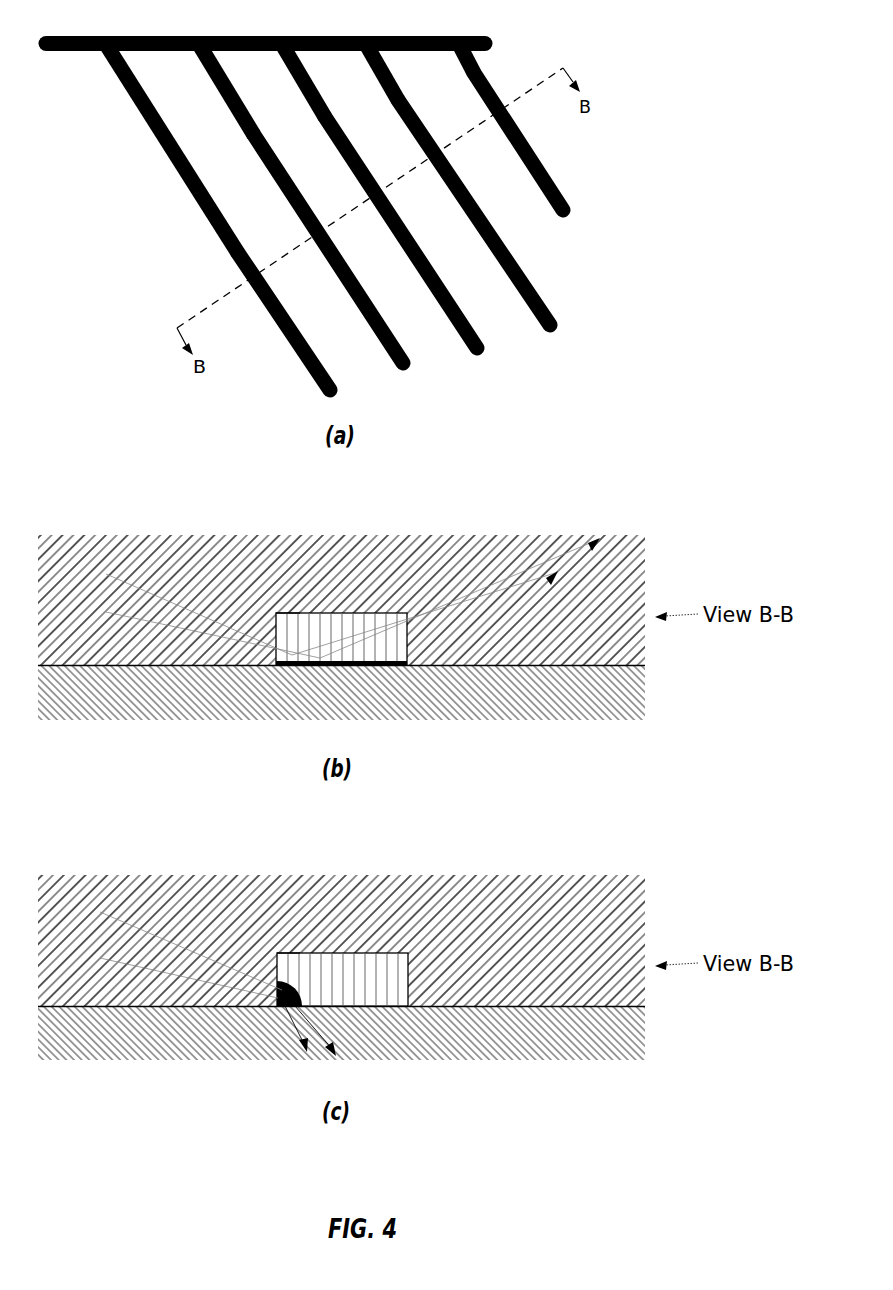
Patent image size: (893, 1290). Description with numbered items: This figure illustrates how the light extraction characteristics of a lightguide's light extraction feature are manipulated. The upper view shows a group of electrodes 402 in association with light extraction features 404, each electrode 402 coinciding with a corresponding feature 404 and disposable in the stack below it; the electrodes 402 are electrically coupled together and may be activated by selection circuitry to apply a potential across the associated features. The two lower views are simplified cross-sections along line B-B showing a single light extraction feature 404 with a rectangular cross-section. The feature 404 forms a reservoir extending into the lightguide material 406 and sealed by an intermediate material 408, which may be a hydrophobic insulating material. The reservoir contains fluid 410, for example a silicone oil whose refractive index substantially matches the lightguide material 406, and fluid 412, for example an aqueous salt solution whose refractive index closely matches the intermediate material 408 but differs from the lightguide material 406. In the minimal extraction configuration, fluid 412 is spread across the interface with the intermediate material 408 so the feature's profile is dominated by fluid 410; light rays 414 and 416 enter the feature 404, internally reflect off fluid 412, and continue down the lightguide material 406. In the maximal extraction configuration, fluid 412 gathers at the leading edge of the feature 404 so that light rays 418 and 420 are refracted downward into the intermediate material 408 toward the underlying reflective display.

The electrode 402 is at (222, 238).
The light extraction feature 404 is at (292, 311).
The lightguide material 406 is at (190, 538).
The intermediate material 408 is at (513, 710).
The fluid 410 is at (288, 624).
The fluid 412 is at (372, 668).
The light ray 414 is at (313, 606).
The light ray 416 is at (334, 598).
The light ray 418 is at (185, 973).
The light ray 420 is at (199, 999).